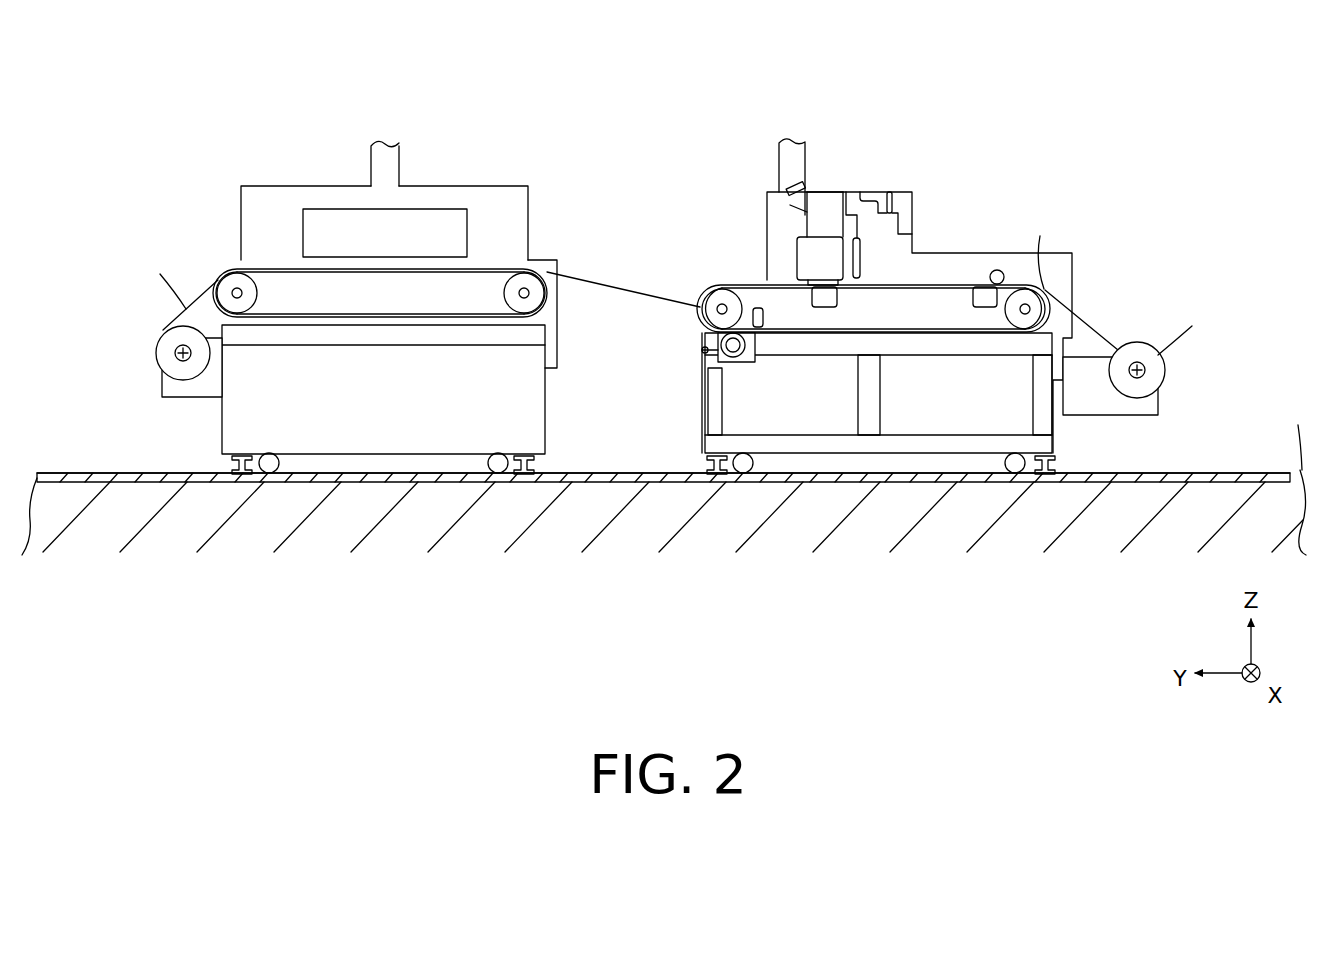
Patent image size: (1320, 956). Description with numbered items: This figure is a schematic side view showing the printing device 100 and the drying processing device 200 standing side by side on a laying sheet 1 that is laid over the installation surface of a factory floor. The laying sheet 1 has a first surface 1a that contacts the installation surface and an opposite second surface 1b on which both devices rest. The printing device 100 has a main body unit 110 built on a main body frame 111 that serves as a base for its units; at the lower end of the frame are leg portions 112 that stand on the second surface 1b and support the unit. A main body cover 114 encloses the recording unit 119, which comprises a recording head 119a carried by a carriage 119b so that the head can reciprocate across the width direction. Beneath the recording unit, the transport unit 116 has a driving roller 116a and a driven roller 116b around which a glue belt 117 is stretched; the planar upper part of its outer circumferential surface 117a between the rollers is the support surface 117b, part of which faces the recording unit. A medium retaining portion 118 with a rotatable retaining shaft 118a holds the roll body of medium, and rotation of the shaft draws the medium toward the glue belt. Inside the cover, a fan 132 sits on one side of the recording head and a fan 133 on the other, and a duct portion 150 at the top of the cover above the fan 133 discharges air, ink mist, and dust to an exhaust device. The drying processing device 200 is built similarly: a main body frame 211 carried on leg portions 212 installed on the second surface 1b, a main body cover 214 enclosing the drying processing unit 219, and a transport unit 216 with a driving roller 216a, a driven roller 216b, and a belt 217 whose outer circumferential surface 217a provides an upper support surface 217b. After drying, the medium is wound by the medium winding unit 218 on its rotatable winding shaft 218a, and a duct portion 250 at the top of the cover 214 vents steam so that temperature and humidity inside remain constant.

The drying processing device 200 is at (273, 131).
The main body cover 214 is at (452, 186).
The duct portion 250 is at (371, 154).
The drying processing unit 219 is at (303, 234).
The belt 217 is at (550, 271).
The outer circumferential surface 217a is at (460, 318).
The support surface 217b is at (497, 269).
The transport unit 216 is at (559, 298).
The driving roller 216a is at (258, 300).
The driven roller 216b is at (505, 300).
The main body frame 211 is at (551, 420).
The medium winding unit 218 is at (155, 345).
The winding shaft 218a is at (180, 357).
The leg portions 212 is at (239, 464).
The printing device 100 is at (1030, 131).
The main body unit 110 is at (990, 204).
The duct portion 150 is at (779, 155).
The fan 133 is at (791, 195).
The main body cover 114 is at (823, 190).
The recording unit 119 is at (833, 232).
The fan 132 is at (890, 205).
The carriage 119b is at (800, 260).
The recording head 119a is at (836, 292).
The glue belt 117 is at (1054, 292).
The outer circumferential surface 117a is at (1046, 333).
The support surface 117b is at (955, 284).
The transport unit 116 is at (1062, 306).
The driving roller 116a is at (744, 297).
The driven roller 116b is at (1004, 300).
The main body frame 111 is at (1060, 401).
The medium retaining portion 118 is at (1174, 368).
The retaining shaft 118a is at (1143, 374).
The leg portions 112 is at (714, 463).
The laying sheet 1 is at (1256, 473).
The first surface 1a is at (1182, 561).
The second surface 1b is at (1213, 473).